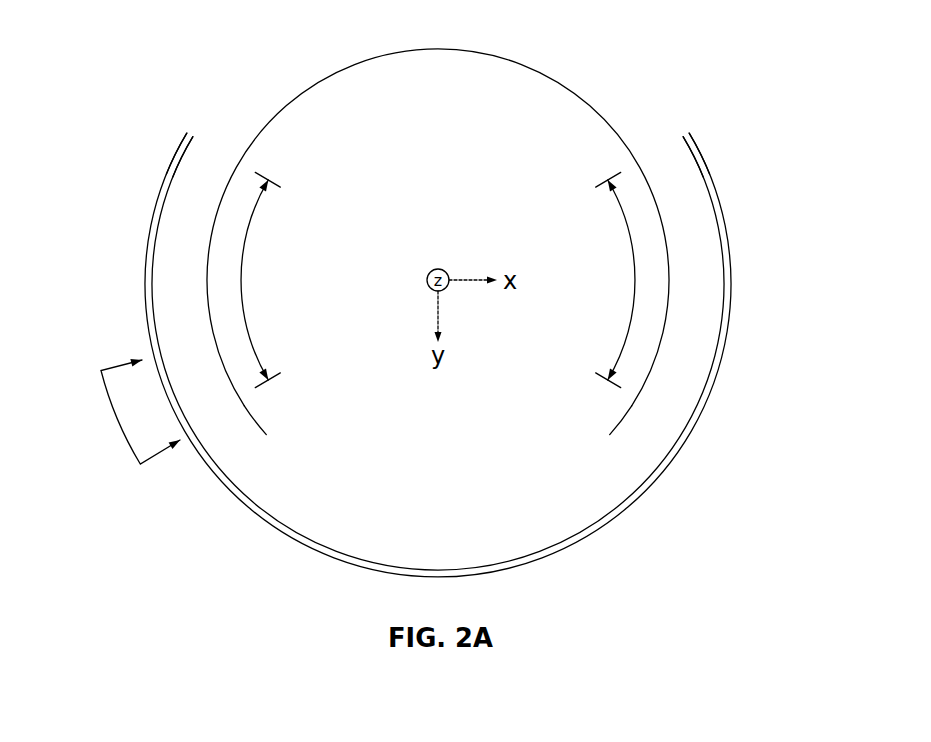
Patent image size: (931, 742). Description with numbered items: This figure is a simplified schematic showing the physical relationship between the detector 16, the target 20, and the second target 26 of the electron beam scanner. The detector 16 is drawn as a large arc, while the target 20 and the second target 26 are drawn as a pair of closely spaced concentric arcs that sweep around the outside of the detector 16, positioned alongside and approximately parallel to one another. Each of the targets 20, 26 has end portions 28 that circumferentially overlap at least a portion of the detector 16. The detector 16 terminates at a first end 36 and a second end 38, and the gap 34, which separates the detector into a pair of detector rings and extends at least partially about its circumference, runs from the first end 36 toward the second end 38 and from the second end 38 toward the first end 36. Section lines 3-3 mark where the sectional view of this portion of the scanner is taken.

The detector 16 is at (583, 97).
The target 20 is at (627, 508).
The second target 26 is at (618, 507).
The end portions 28 is at (163, 192).
The gap 34 is at (242, 276).
The first end 36 is at (252, 411).
The second end 38 is at (623, 411).
The section lines 3-3 is at (114, 412).